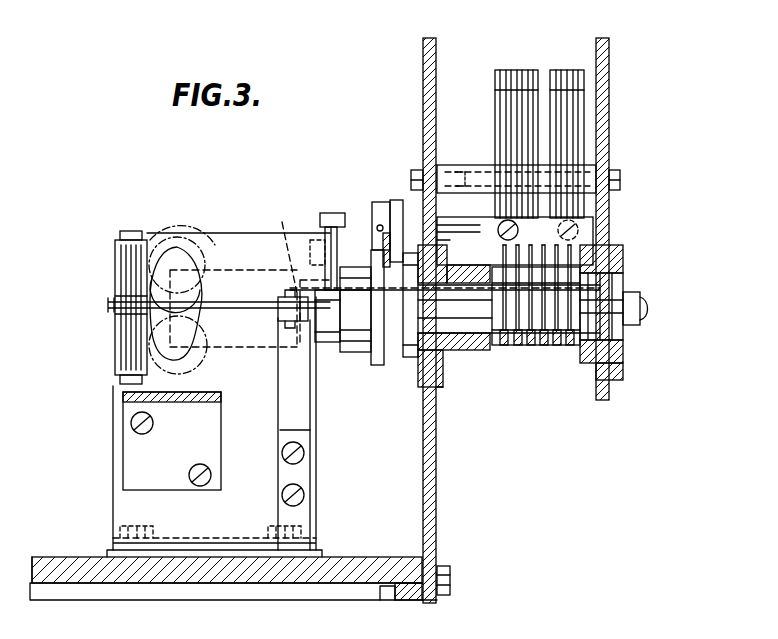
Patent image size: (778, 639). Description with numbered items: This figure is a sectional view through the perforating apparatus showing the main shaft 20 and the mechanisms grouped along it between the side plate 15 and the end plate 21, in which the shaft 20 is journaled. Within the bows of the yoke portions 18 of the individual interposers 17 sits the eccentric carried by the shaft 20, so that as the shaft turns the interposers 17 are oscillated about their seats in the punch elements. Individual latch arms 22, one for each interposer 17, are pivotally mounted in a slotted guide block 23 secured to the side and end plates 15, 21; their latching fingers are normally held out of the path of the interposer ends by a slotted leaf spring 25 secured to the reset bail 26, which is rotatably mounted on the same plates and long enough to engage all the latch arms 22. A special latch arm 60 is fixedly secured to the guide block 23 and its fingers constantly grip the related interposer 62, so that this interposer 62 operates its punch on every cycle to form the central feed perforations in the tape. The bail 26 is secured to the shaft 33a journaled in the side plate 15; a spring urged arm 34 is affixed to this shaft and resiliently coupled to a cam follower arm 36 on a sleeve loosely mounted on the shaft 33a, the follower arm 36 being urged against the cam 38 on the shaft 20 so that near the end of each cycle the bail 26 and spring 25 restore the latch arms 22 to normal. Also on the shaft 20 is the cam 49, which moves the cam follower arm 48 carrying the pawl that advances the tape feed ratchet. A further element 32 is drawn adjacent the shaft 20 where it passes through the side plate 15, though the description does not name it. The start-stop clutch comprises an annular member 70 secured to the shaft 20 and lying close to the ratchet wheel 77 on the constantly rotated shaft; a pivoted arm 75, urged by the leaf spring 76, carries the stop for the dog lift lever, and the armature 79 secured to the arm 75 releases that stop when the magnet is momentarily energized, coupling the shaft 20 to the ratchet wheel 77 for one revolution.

The side plate 15 is at (437, 76).
The end plate 21 is at (609, 97).
The latch arms 22 is at (497, 150).
The slotted guide block 23 is at (463, 177).
The special latch arm 60 is at (542, 203).
The yoke portion 18 is at (623, 268).
The interposer 17 is at (510, 345).
The interposer 62 is at (536, 346).
The shaft 20 is at (462, 346).
The bushing 32 is at (446, 352).
The cam 38 is at (438, 398).
The cam follower arm 48 is at (380, 366).
The cam 49 is at (371, 370).
The annular member 70 is at (326, 345).
The leaf spring 76 is at (297, 376).
The pivoted arm 75 is at (217, 303).
The armature 79 is at (178, 258).
The ratchet wheel 77 is at (288, 236).
The shaft 33a is at (370, 245).
The spring urged arm 34 is at (373, 218).
The cam follower arm 36 is at (400, 223).
The reset bail 26 is at (490, 236).
The slotted leaf spring 25 is at (560, 236).